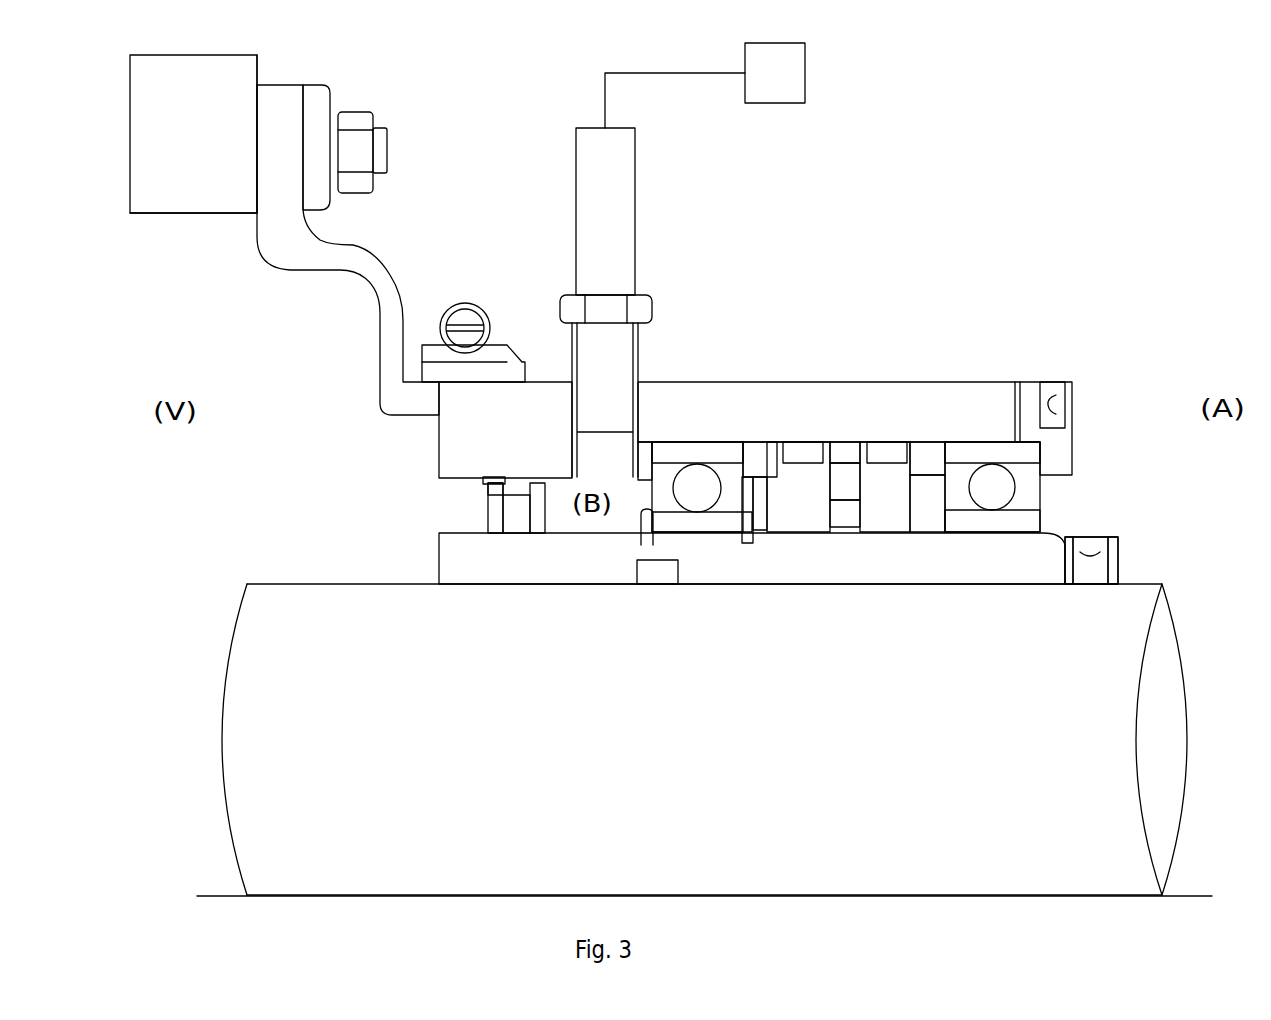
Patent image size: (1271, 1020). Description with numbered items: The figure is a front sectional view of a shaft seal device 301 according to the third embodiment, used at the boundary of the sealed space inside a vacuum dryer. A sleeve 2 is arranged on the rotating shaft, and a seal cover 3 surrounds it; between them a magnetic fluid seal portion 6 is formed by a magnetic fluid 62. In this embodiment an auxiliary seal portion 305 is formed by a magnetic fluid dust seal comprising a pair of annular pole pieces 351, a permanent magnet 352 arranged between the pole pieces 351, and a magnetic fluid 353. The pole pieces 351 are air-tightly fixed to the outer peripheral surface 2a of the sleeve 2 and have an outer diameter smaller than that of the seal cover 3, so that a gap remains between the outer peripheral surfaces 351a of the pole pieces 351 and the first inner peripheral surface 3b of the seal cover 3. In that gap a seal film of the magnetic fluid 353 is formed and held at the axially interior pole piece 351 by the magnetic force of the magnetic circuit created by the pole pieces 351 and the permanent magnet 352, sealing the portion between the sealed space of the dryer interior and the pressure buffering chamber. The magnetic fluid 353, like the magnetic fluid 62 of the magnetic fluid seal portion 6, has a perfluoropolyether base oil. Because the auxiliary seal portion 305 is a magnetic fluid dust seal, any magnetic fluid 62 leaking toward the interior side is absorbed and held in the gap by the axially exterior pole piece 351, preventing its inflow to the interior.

The shaft seal device 301 is at (1092, 314).
The seal cover 3 is at (438, 458).
The first inner peripheral surface 3b is at (638, 440).
The sleeve 2 is at (1130, 559).
The outer peripheral surface 2a is at (640, 525).
The magnetic fluid seal portion 6 is at (945, 540).
The magnetic fluid 62 is at (889, 535).
The auxiliary seal portion 305 is at (410, 475).
The annular pole piece 351 is at (507, 490).
The outer peripheral surface 351a is at (486, 481).
The permanent magnet 352 is at (540, 497).
The magnetic fluid 353 is at (480, 481).